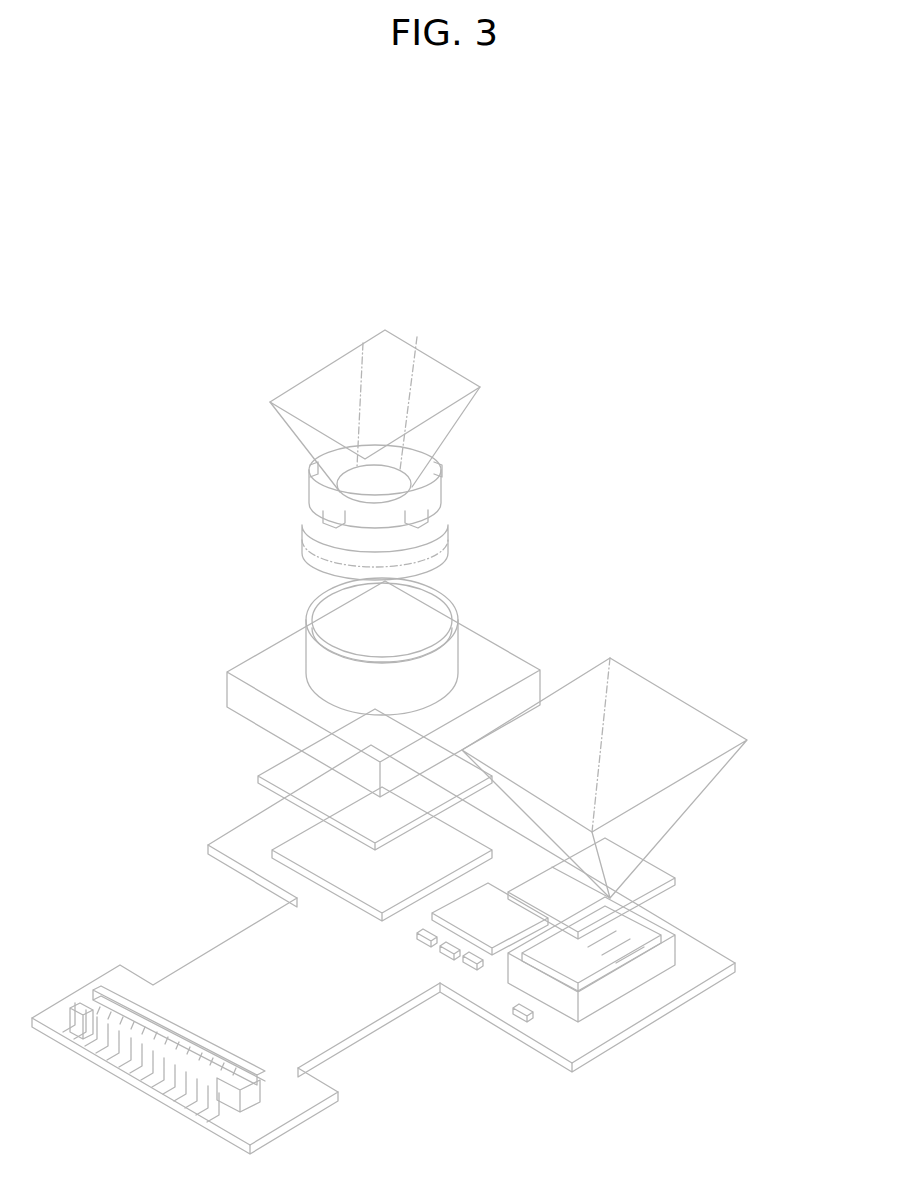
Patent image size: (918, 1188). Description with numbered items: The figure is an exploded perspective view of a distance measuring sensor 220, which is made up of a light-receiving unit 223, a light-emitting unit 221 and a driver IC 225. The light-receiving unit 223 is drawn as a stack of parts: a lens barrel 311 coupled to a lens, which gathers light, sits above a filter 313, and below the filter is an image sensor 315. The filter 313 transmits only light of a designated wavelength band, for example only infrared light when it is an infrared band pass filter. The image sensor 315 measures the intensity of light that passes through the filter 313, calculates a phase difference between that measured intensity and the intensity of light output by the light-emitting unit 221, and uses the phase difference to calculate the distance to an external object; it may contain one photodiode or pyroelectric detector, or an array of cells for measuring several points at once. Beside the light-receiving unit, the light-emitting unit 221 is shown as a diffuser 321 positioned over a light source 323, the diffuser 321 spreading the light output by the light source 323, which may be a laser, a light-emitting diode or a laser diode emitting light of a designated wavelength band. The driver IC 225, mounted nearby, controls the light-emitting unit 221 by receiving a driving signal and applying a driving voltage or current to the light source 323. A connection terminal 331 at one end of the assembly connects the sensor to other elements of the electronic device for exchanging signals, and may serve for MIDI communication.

The distance measuring sensor 220 is at (173, 307).
The light-receiving unit 223 is at (168, 780).
The lens barrel 311 is at (308, 503).
The filter 313 is at (258, 778).
The image sensor 315 is at (275, 852).
The light-emitting unit 221 is at (787, 897).
The diffuser 321 is at (675, 879).
The light source 323 is at (633, 978).
The driver IC 225 is at (488, 948).
The connection terminal 331 is at (113, 1065).